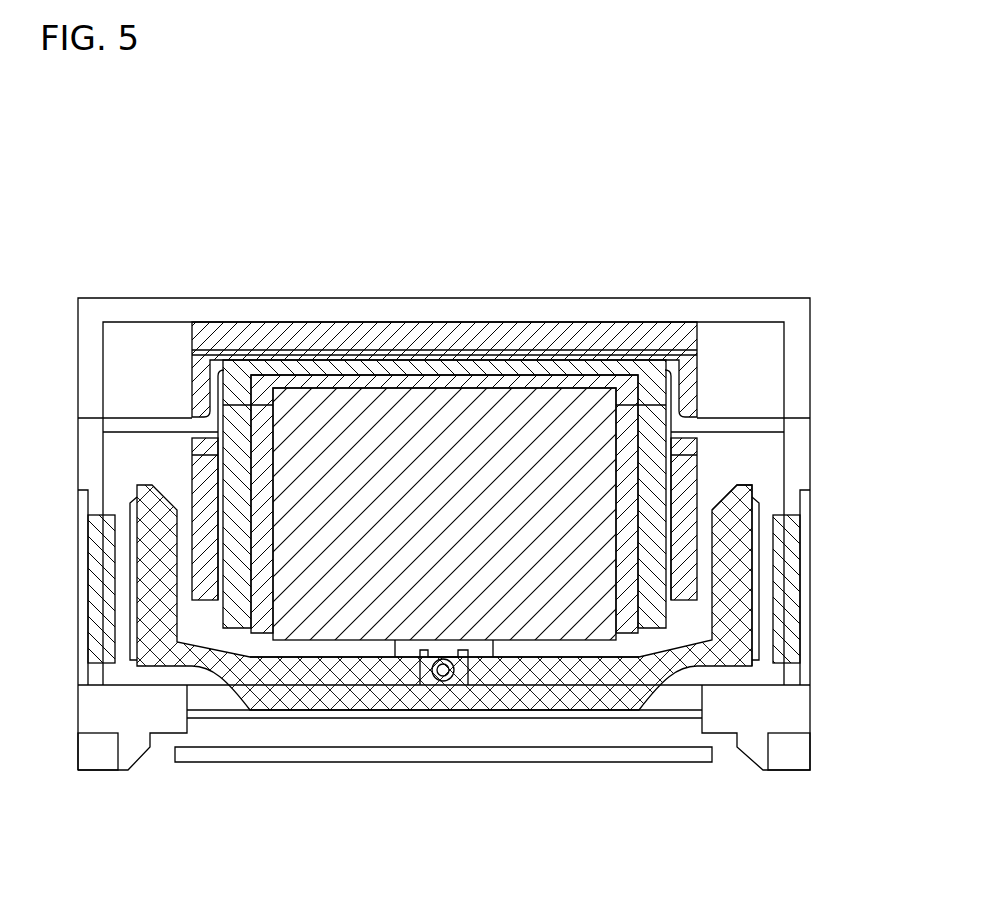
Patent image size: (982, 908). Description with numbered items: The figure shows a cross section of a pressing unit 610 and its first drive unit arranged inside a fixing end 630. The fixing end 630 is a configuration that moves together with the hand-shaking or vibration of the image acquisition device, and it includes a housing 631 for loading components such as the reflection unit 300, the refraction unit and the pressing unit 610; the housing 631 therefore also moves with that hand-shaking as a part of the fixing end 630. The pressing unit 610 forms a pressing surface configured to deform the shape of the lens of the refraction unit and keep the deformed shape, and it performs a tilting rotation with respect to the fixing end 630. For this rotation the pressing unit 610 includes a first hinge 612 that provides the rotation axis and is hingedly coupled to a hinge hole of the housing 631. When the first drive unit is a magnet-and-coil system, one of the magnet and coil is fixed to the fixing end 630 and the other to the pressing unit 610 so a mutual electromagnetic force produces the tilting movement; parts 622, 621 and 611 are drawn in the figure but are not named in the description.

The reflection unit 300 is at (529, 423).
The fixing end 630 is at (739, 274).
The housing 631 is at (752, 369).
The cushion member 622 is at (760, 546).
The side support member 621 is at (793, 592).
The pressing unit 610 is at (320, 681).
The first hinge 612 is at (446, 688).
The support plate 611 is at (537, 660).